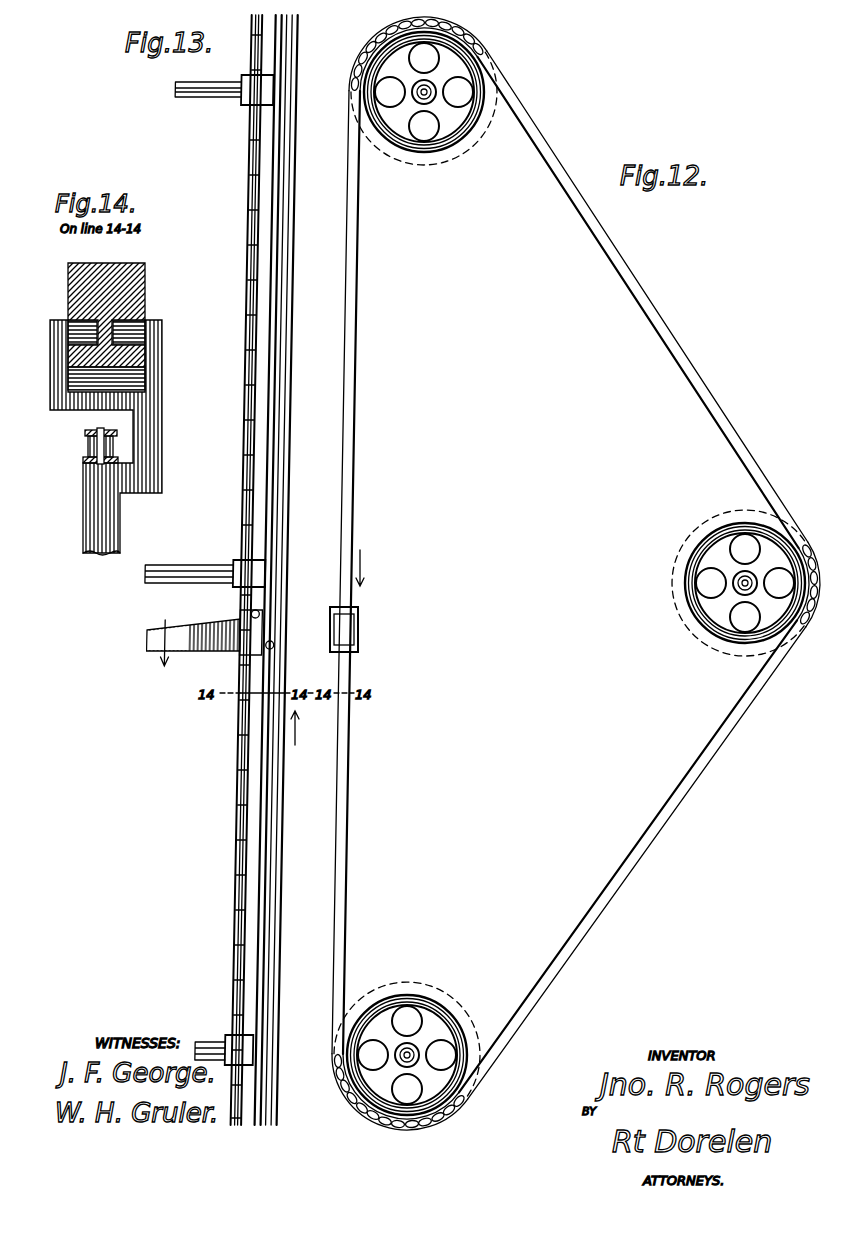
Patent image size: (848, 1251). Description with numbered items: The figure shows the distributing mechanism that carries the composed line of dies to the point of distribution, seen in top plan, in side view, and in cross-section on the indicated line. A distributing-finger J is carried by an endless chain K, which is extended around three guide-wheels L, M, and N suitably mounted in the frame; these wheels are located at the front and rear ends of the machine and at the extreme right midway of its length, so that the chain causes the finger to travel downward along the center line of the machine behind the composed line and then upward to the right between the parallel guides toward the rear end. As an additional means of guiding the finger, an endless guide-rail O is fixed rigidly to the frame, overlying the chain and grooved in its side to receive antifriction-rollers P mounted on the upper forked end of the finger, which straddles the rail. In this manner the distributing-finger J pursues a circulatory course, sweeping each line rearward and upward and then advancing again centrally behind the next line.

In FIG. 12, the endless chain K is at (348, 94).
In FIG. 13, the endless chain K is at (240, 539).
In FIG. 14, the endless chain K is at (88, 448).
In FIG. 12, the guide-wheel M is at (431, 148).
In FIG. 12, the guide-wheel N is at (702, 562).
In FIG. 12, the guide-wheel L is at (436, 996).
In FIG. 12, the distributing-finger J is at (350, 629).
In FIG. 13, the distributing-finger J is at (228, 653).
In FIG. 14, the distributing-finger J is at (162, 440).
In FIG. 13, the endless guide-rail O is at (298, 217).
In FIG. 14, the endless guide-rail O is at (147, 272).
In FIG. 14, the antifriction-rollers P is at (68, 338).